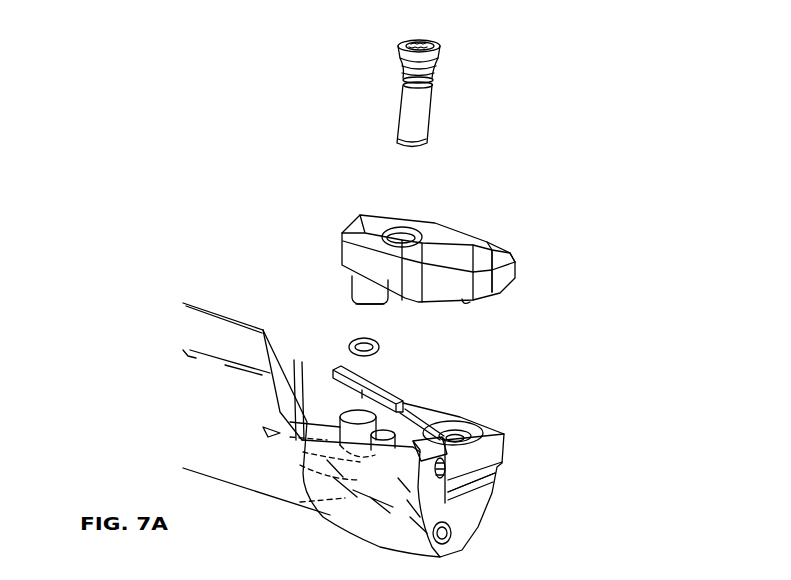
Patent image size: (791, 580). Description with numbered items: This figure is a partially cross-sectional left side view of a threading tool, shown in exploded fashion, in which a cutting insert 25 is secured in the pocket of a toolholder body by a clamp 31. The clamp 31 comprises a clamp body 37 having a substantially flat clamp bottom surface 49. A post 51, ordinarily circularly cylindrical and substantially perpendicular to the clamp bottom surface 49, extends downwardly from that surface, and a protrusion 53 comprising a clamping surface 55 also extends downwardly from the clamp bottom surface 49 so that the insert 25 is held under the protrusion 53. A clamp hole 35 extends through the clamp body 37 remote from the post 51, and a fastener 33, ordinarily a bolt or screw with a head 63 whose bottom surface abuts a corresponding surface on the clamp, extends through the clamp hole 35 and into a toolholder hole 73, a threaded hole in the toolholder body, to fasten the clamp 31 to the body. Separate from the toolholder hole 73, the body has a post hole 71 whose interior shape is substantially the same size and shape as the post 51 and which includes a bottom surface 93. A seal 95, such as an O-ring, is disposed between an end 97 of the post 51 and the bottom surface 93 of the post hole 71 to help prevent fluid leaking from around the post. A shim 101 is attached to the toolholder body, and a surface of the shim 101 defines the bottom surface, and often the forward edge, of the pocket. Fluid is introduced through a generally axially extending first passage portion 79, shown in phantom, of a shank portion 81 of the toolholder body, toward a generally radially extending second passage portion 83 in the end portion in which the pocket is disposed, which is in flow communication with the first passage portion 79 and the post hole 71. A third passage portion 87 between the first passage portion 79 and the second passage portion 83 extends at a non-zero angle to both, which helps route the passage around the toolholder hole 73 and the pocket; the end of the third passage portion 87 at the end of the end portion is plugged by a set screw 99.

The cutting insert 25 is at (492, 443).
The clamp 31 is at (525, 260).
The fastener 33 is at (446, 122).
The clamp hole 35 is at (403, 238).
The clamp body 37 is at (495, 278).
The clamp bottom surface 49 is at (403, 298).
The post 51 is at (352, 288).
The protrusion 53 is at (467, 302).
The clamping surface 55 is at (466, 306).
The head 63 is at (410, 133).
The post hole 71 is at (358, 412).
The toolholder hole 73 is at (387, 438).
The first passage portion 79 is at (213, 387).
The shank portion 81 is at (369, 441).
The second passage portion 83 is at (300, 502).
The third passage portion 87 is at (293, 437).
The bottom surface 93 is at (300, 467).
The seal 95 is at (350, 342).
The end 97 is at (355, 306).
The set screw 99 is at (453, 537).
The shim 101 is at (483, 482).